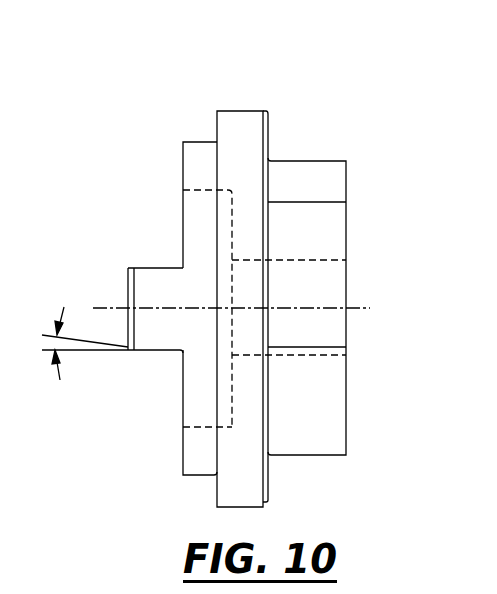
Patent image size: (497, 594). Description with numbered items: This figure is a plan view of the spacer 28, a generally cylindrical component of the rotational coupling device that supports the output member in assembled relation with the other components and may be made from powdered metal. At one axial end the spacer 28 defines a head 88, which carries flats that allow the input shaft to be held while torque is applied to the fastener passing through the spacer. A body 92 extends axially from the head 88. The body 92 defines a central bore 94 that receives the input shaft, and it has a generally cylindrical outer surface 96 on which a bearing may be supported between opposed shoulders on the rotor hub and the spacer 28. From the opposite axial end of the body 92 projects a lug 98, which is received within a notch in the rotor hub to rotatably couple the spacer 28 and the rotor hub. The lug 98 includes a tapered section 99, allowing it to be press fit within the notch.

The spacer 28 is at (335, 140).
The head 88 is at (322, 412).
The body 92 is at (243, 498).
The central bore 94 is at (193, 423).
The outer surface 96 is at (197, 142).
The lug 98 is at (158, 290).
The tapered section 99 is at (133, 351).